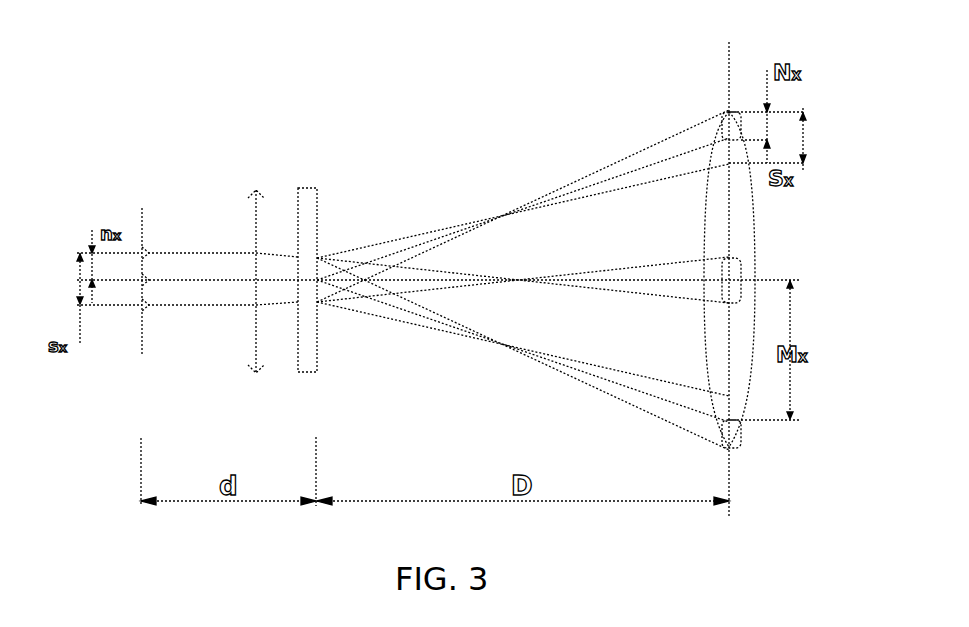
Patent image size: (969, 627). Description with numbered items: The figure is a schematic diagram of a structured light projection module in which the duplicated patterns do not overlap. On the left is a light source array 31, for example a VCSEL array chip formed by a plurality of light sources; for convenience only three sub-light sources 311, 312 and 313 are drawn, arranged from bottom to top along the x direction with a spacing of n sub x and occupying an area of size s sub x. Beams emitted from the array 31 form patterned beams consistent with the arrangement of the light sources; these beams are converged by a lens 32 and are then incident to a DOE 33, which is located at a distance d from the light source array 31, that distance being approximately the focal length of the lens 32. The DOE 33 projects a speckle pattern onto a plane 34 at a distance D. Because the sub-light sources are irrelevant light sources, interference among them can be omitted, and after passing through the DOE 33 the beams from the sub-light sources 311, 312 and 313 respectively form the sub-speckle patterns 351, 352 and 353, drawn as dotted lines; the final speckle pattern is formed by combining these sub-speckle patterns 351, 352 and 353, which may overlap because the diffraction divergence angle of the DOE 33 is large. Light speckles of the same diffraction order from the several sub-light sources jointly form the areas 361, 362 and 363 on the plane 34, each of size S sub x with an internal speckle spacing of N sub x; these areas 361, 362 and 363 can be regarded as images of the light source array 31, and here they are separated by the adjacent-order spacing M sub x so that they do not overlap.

The light source array 31 is at (143, 216).
The sub-light source 311 is at (148, 308).
The sub-light source 312 is at (148, 284).
The sub-light source 313 is at (148, 251).
The lens 32 is at (258, 212).
The DOE 33 is at (318, 202).
The plane 34 is at (728, 68).
The sub-speckle pattern 351 is at (715, 119).
The sub-speckle pattern 352 is at (712, 146).
The sub-speckle pattern 353 is at (717, 170).
The area formed by light speckles of the same diffraction order 361 is at (740, 136).
The area formed by light speckles of the same diffraction order 362 is at (737, 262).
The area formed by light speckles of the same diffraction order 363 is at (734, 430).